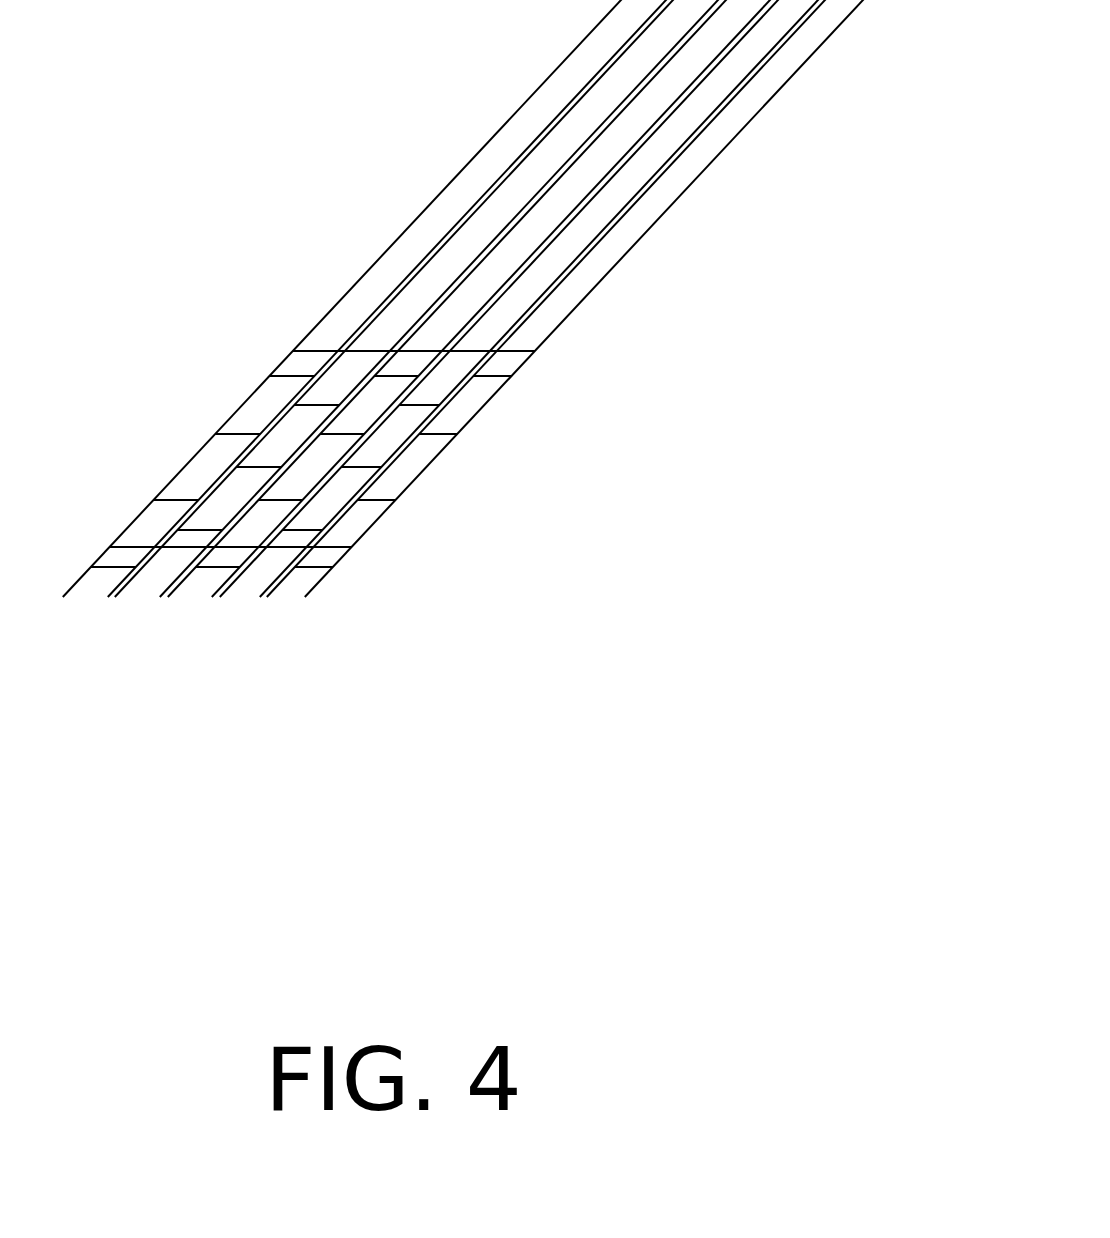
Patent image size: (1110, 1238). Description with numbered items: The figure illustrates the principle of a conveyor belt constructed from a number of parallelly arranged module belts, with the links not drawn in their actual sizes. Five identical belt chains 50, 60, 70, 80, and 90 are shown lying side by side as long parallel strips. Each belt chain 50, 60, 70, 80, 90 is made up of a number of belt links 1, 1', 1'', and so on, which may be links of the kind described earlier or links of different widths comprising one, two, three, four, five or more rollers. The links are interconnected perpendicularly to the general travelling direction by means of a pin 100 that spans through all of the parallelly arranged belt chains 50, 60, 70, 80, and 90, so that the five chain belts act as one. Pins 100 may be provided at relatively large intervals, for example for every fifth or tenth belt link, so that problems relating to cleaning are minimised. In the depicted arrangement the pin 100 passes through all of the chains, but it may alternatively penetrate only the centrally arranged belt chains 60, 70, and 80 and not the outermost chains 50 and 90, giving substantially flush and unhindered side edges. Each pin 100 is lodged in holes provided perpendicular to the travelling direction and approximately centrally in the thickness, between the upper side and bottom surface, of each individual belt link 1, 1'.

The pin 100 is at (330, 350).
The belt chain 50 is at (302, 363).
The belt chain 60 is at (397, 325).
The belt chain 70 is at (480, 285).
The belt chain 80 is at (560, 253).
The belt chain 90 is at (578, 287).
The belt link 1 is at (362, 575).
The belt link 1' is at (457, 487).
The belt link 1'' is at (515, 406).